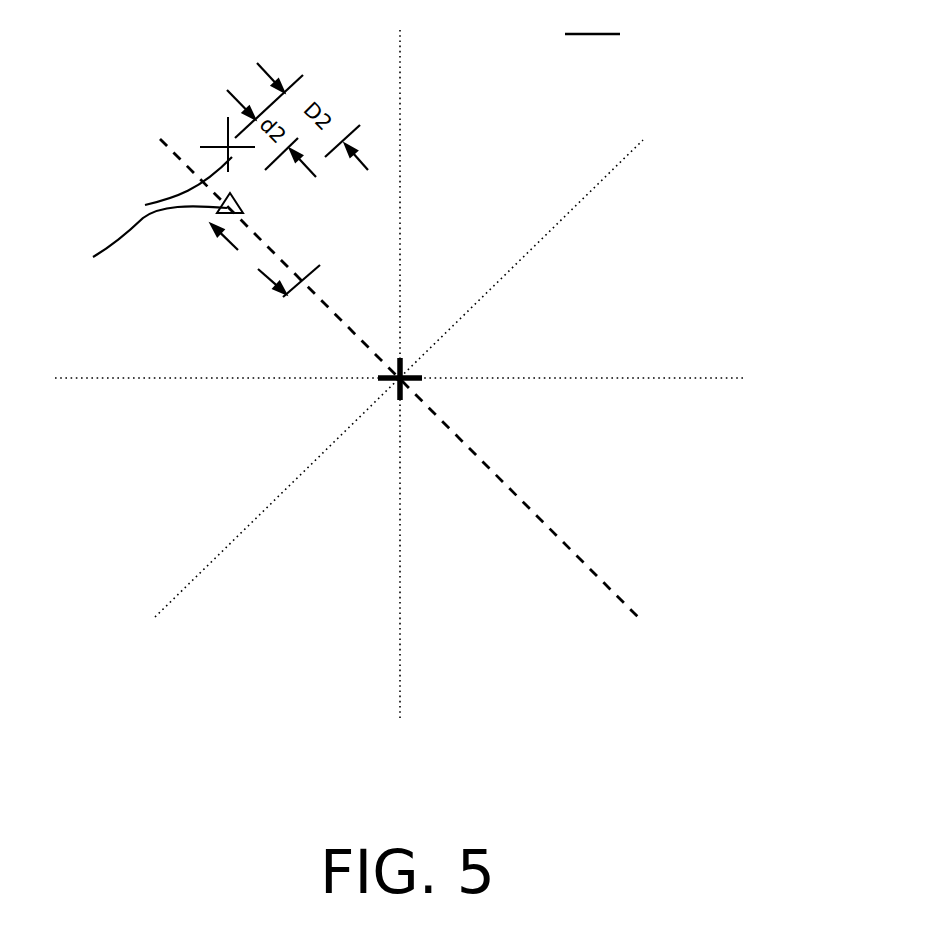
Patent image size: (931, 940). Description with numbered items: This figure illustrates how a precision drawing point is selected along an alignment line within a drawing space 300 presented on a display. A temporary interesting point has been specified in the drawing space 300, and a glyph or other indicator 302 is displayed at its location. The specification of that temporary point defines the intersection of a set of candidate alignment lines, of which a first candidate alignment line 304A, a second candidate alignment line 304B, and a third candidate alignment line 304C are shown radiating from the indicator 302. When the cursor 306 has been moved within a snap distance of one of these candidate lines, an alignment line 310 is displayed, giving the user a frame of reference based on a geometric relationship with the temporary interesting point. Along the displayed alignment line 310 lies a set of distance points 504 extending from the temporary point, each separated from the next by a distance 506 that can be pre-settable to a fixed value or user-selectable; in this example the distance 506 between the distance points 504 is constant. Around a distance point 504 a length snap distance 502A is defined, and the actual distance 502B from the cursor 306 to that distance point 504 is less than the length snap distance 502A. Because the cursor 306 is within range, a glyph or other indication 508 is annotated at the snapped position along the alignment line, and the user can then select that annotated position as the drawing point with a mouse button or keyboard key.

The drawing space 300 is at (578, 56).
The glyph or other indicator 302 is at (391, 383).
The candidate alignment line 304A is at (401, 128).
The candidate alignment line 304B is at (605, 181).
The candidate alignment line 304C is at (507, 383).
The cursor 306 is at (163, 189).
The alignment line 310 is at (527, 505).
The length snap distance D2 502A is at (330, 108).
The distance d2 502B is at (274, 116).
The distance points 504 is at (243, 191).
The distance between distance points 506 is at (245, 268).
The glyph or other indication 508 is at (136, 239).